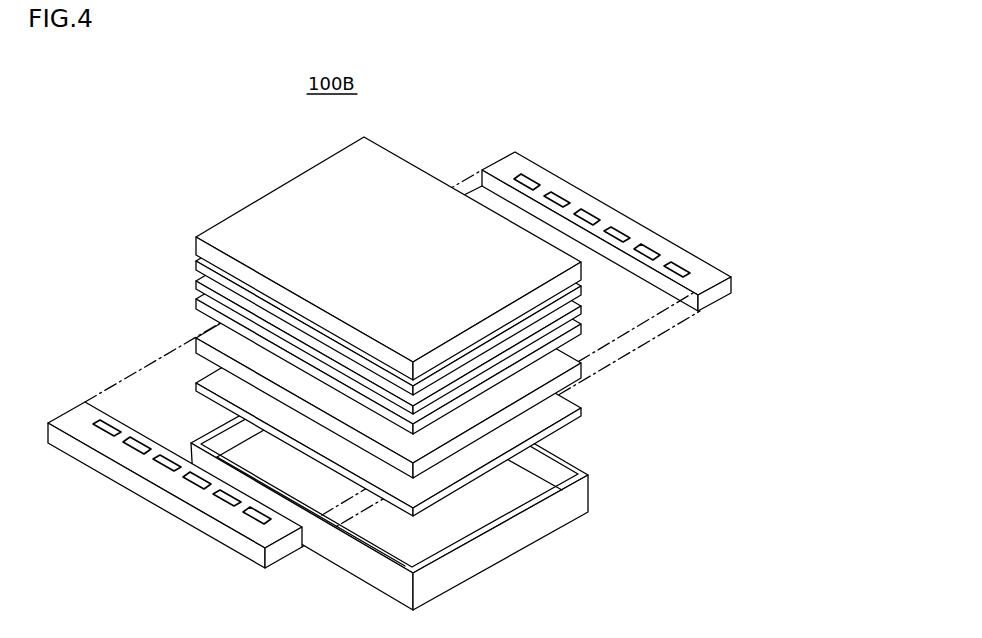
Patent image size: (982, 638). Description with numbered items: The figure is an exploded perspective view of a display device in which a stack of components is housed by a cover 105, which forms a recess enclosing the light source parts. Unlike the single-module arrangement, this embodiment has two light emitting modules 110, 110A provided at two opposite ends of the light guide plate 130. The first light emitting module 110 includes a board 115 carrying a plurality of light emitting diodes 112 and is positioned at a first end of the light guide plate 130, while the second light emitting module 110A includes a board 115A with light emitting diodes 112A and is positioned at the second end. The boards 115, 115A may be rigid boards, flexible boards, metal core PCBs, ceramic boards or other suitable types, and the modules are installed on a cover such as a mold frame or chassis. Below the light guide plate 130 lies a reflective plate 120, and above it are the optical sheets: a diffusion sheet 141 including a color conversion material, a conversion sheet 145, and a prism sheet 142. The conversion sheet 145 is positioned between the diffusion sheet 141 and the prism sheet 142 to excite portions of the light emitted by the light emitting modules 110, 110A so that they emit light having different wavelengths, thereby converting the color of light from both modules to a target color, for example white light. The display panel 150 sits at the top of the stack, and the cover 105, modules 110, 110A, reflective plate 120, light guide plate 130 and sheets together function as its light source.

The cover 105 is at (510, 543).
The light emitting module 110 is at (438, 349).
The light emitting diodes 112 is at (674, 267).
The board 115 is at (714, 275).
The second light emitting module 110A is at (175, 499).
The light emitting diodes 112A is at (217, 498).
The board 115A is at (243, 546).
The reflective plate 120 is at (203, 395).
The light guide plate 130 is at (195, 347).
The diffusion sheet 141 is at (196, 304).
The conversion sheet 145 is at (196, 285).
The prism sheet 142 is at (196, 266).
The display panel 150 is at (196, 242).